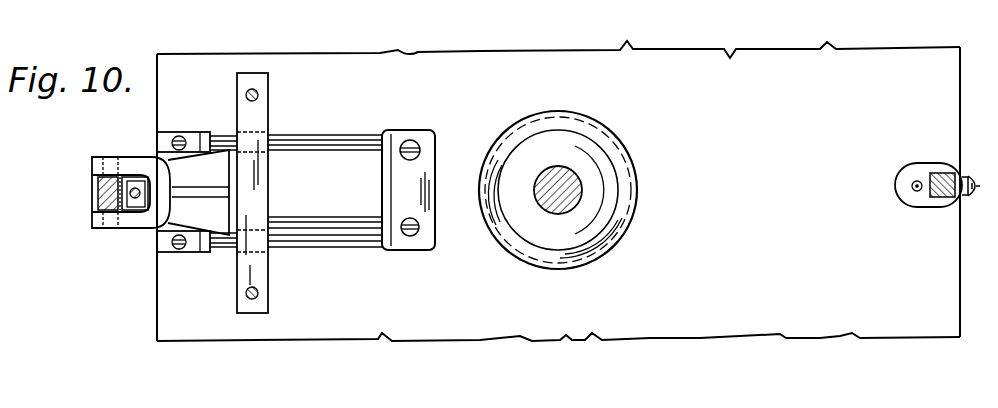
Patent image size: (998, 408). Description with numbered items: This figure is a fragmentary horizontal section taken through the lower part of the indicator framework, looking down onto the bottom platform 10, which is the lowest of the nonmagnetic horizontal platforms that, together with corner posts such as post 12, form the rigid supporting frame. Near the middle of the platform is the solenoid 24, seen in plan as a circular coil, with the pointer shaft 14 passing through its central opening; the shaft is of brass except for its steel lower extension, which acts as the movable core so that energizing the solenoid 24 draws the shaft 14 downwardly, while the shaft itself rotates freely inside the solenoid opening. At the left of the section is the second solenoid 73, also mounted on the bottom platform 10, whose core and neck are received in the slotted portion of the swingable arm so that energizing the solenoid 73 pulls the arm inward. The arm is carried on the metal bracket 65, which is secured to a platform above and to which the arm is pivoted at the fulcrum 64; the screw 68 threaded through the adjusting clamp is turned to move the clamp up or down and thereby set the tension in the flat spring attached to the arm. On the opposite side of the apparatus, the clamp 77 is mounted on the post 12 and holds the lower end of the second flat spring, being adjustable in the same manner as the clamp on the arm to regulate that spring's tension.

The bottom platform 10 is at (157, 284).
The post 12 is at (938, 173).
The pointer shaft 14 is at (570, 172).
The solenoid 24 is at (614, 177).
The pivot 64 is at (98, 176).
The metal bracket 65 is at (204, 190).
The screw 68 is at (134, 189).
The solenoid 73 is at (332, 143).
The clamp 77 is at (912, 207).